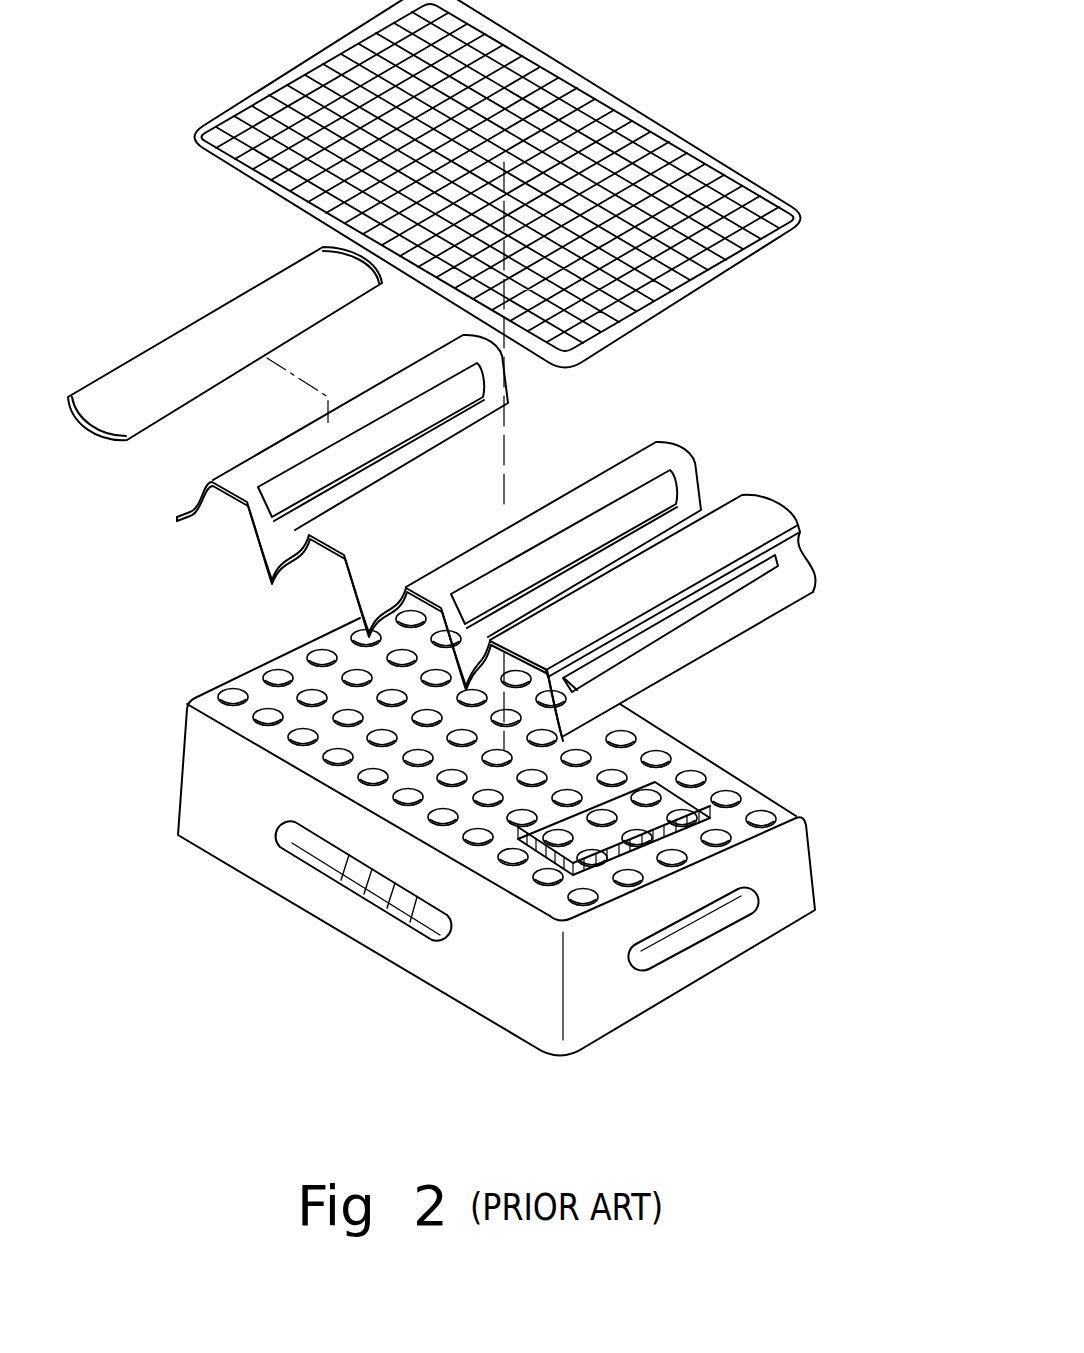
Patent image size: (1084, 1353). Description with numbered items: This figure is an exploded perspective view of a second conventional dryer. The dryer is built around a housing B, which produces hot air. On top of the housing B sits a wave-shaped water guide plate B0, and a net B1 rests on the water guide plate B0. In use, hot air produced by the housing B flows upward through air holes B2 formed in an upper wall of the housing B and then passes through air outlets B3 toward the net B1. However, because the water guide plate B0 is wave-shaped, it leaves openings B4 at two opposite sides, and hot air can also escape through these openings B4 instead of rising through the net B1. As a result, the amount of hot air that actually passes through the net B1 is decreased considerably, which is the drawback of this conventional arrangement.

The net B1 is at (773, 238).
The openings B4 is at (224, 516).
The air outlets B3 is at (679, 509).
The water guide plate B0 is at (805, 565).
The air holes B2 is at (660, 762).
The housing B is at (790, 871).